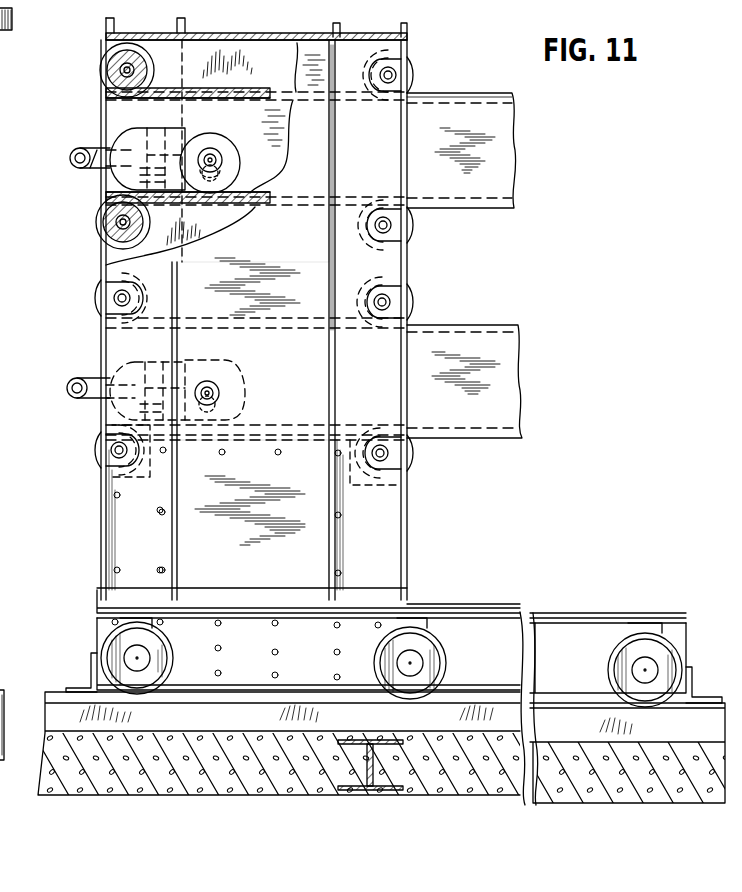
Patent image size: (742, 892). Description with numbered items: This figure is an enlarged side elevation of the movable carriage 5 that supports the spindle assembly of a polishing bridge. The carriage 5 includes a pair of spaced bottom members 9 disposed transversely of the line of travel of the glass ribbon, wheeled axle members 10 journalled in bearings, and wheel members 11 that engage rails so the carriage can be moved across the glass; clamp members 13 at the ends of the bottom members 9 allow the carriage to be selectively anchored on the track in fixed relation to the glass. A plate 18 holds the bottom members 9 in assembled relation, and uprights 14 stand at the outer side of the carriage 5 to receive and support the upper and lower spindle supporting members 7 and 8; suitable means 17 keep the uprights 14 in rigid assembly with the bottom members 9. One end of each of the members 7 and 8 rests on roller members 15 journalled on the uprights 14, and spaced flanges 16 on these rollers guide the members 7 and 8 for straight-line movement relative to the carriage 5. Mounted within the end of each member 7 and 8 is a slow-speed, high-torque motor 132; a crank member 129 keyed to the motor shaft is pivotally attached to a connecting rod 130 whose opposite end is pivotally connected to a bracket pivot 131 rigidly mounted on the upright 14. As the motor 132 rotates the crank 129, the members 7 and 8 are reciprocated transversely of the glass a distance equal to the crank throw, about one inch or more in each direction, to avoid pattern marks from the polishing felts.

The movable carriage 5 is at (285, 253).
The upper spindle supporting member 7 is at (495, 133).
The lower spindle supporting member 8 is at (510, 375).
The bottom members 9 is at (306, 648).
The wheeled axle members 10 is at (137, 658).
The wheel members 11 is at (446, 665).
The clamp members 13 is at (90, 680).
The uprights 14 is at (115, 522).
The roller members 15 is at (105, 62).
The spaced flanges 16 is at (106, 84).
The means for maintaining uprights in rigid assembly 17 is at (206, 563).
The plate 18 is at (447, 612).
The crank member 129 is at (211, 158).
The connecting rod 130 is at (95, 170).
The bracket pivot 131 is at (100, 150).
The motor 132 is at (137, 136).